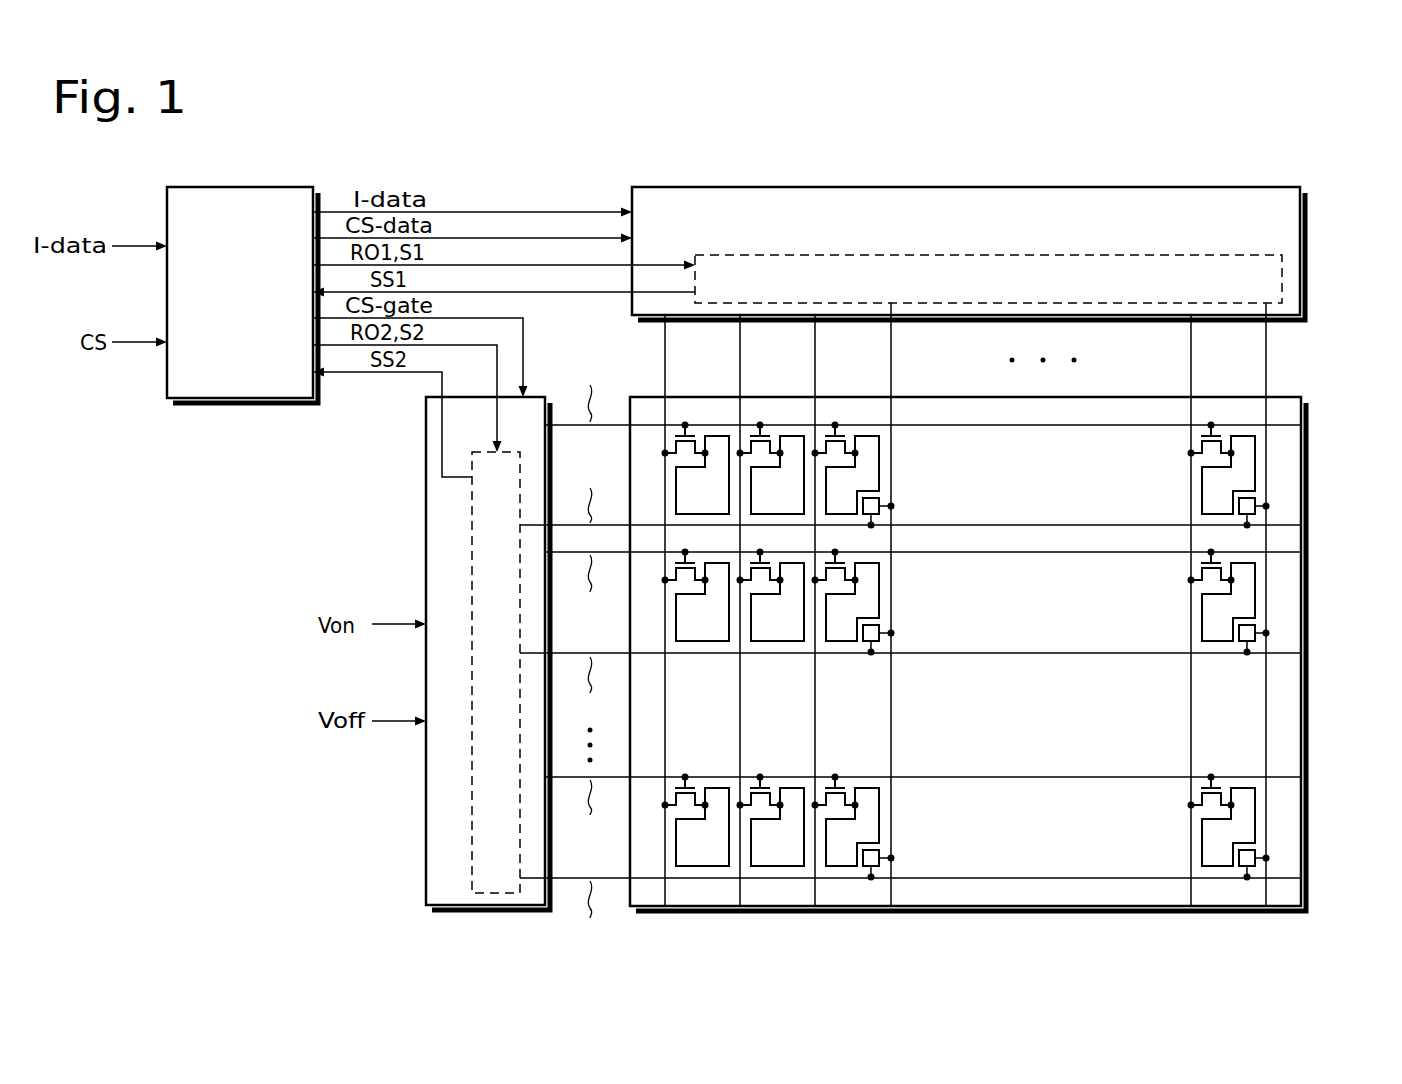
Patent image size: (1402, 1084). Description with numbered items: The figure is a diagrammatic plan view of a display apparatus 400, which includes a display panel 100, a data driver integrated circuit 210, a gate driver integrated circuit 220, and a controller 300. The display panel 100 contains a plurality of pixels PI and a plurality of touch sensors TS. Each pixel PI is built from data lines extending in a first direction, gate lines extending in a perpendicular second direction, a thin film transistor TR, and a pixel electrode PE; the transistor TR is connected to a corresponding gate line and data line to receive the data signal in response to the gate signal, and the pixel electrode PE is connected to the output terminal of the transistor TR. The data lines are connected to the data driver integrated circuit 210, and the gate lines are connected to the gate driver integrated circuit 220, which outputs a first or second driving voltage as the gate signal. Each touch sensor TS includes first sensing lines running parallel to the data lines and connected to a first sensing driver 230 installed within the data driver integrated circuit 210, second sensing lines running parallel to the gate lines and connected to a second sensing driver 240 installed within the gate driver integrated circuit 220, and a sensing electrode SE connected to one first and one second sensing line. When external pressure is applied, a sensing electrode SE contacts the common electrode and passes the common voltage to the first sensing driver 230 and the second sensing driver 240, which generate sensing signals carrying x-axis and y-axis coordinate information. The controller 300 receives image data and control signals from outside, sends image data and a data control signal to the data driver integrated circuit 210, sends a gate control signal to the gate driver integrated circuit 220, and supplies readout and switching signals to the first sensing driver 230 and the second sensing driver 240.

The display panel 100 is at (955, 623).
The data driver integrated circuit 210 is at (1258, 187).
The gate driver integrated circuit 220 is at (426, 860).
The first sensing driver 230 is at (1157, 255).
The second sensing driver 240 is at (472, 811).
The controller 300 is at (272, 187).
The display apparatus 400 is at (837, 121).
The pixel PI is at (1216, 475).
The thin film transistor TR is at (1192, 438).
The pixel electrode PE is at (1203, 496).
The touch sensor TS is at (1265, 497).
The sensing electrode SE is at (894, 502).